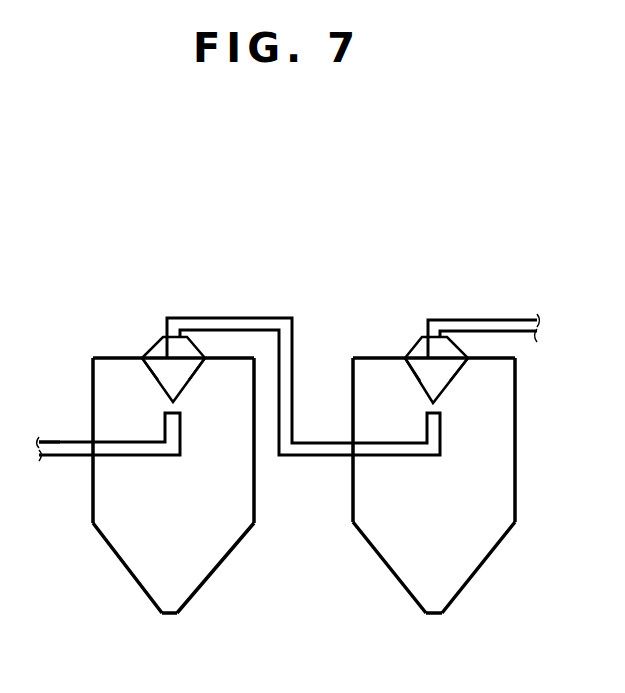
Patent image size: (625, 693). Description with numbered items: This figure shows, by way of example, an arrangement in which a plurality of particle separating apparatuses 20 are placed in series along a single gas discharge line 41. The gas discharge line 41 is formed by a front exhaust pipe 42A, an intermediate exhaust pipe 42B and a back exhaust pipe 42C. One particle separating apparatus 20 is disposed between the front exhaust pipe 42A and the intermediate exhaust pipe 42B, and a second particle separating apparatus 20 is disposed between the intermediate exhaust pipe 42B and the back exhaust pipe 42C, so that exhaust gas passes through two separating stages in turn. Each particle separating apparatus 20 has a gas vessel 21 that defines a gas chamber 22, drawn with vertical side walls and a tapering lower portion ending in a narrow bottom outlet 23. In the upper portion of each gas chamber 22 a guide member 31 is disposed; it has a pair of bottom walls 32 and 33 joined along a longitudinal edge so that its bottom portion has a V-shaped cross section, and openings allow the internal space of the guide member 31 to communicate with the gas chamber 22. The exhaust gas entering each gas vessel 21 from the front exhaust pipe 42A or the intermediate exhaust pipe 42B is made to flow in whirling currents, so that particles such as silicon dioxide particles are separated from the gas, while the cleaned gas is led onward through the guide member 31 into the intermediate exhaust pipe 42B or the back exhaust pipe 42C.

The particle separating apparatus 20 is at (127, 346).
The gas vessel 21 is at (100, 535).
The gas chamber 22 is at (103, 380).
The bottom discharge outlet 23 is at (178, 616).
The guide member 31 is at (158, 346).
The bottom wall 32 is at (196, 378).
The bottom wall 33 is at (152, 372).
The gas discharge line 41 is at (62, 460).
The front exhaust pipe 42A is at (50, 441).
The intermediate exhaust pipe 42B is at (251, 318).
The back exhaust pipe 42C is at (502, 318).